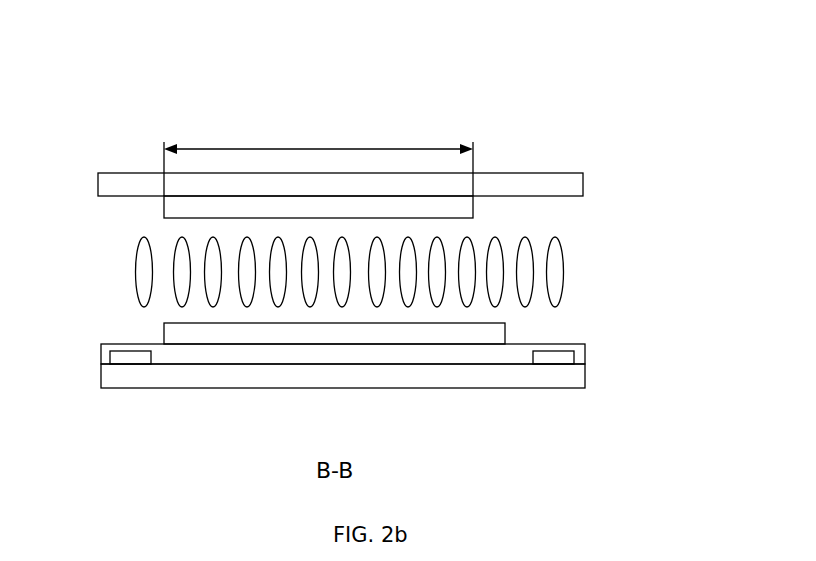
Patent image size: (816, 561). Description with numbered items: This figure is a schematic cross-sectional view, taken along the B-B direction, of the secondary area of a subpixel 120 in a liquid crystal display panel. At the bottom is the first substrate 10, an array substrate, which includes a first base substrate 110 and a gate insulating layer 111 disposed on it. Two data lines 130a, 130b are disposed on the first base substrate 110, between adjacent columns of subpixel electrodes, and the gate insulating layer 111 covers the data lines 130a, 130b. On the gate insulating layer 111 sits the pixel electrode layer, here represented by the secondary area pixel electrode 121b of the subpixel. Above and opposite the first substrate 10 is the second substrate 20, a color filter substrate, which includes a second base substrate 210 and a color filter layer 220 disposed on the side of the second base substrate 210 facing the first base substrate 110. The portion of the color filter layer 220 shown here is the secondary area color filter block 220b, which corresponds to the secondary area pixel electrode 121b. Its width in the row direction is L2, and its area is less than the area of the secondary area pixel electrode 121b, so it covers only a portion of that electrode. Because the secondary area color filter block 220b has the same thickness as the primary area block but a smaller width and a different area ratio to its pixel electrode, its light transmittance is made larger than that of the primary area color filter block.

The subpixel 120 is at (176, 93).
The width of the secondary area color filter block L2 is at (318, 147).
The second substrate 20 is at (382, 194).
The second base substrate 210 is at (583, 183).
The color filter layer 220 is at (473, 209).
The secondary area color filter block 220b is at (164, 207).
The first substrate 10 is at (370, 376).
The first base substrate 110 is at (585, 378).
The gate insulating layer 111 is at (585, 352).
The secondary area pixel electrode 121b is at (505, 333).
The data line 130a is at (133, 362).
The data line 130b is at (553, 360).